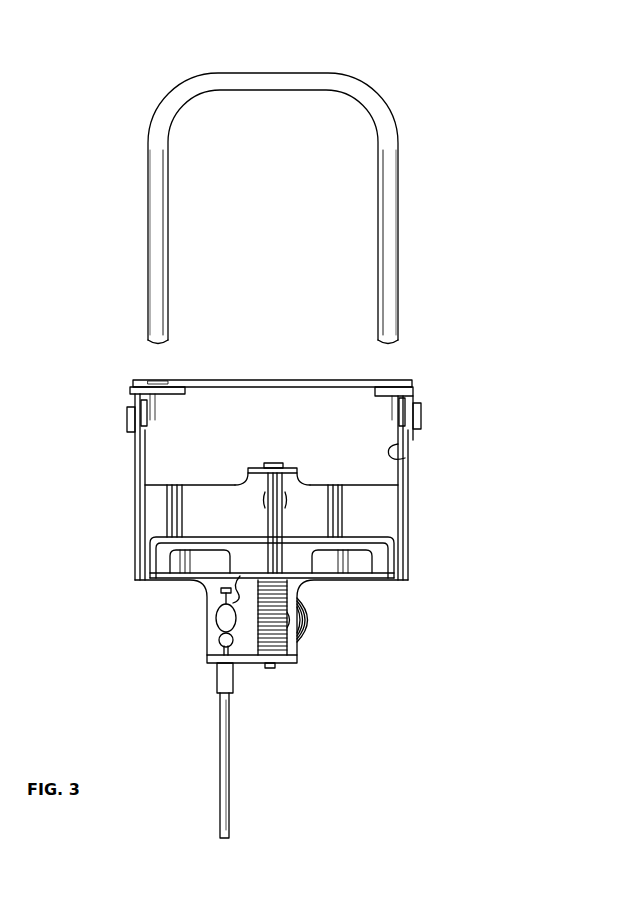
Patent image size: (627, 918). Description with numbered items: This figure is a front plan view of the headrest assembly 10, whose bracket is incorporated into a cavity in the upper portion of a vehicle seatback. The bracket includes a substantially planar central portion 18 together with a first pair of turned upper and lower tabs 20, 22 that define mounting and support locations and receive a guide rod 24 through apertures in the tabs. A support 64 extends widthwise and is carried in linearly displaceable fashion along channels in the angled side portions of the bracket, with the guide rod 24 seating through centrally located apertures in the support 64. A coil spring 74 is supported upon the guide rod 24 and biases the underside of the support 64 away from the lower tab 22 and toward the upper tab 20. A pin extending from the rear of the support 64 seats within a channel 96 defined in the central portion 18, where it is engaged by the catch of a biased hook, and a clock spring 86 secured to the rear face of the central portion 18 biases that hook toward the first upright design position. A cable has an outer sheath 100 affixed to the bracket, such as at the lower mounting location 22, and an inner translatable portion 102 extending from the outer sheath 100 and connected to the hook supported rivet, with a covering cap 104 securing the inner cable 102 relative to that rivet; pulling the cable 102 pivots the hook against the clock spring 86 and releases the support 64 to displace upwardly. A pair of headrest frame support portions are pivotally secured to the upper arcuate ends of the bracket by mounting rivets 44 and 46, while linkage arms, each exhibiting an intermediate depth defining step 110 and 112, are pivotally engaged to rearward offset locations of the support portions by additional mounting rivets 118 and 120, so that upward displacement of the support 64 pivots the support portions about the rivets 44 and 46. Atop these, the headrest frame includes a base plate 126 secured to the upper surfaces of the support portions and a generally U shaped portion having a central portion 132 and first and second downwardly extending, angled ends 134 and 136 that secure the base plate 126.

The headrest assembly 10 is at (82, 336).
The central portion 132 is at (272, 80).
The first downwardly extending and angled end 134 is at (155, 248).
The second downwardly extending and angled end 136 is at (393, 240).
The base plate 126 is at (292, 383).
The central portion 18 is at (380, 507).
The step 110 is at (142, 450).
The step 112 is at (400, 458).
The mounting rivet 44 is at (148, 422).
The mounting rivet 46 is at (395, 408).
The mounting rivet 118 is at (160, 404).
The mounting rivet 120 is at (422, 415).
The upper tab 20 is at (258, 462).
The guide rod 24 is at (285, 512).
The channel 96 is at (262, 498).
The support 64 is at (220, 534).
The coil spring 74 is at (312, 620).
The clock spring 86 is at (310, 638).
The covering cap 104 is at (215, 619).
The inner translatable portion 102 is at (222, 644).
The outer sheath 100 is at (223, 682).
The lower tab 22 is at (288, 668).